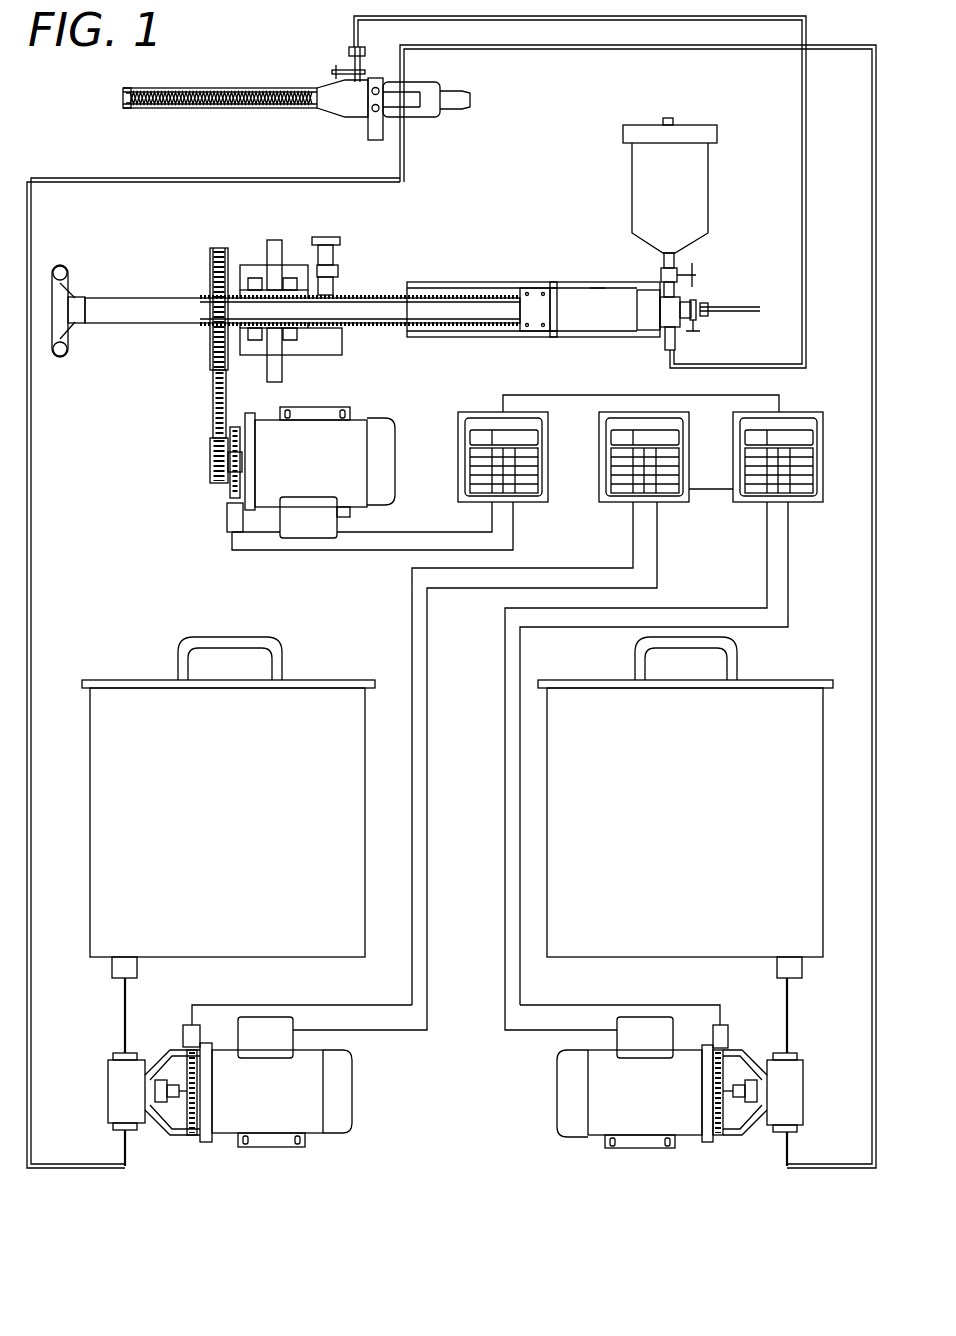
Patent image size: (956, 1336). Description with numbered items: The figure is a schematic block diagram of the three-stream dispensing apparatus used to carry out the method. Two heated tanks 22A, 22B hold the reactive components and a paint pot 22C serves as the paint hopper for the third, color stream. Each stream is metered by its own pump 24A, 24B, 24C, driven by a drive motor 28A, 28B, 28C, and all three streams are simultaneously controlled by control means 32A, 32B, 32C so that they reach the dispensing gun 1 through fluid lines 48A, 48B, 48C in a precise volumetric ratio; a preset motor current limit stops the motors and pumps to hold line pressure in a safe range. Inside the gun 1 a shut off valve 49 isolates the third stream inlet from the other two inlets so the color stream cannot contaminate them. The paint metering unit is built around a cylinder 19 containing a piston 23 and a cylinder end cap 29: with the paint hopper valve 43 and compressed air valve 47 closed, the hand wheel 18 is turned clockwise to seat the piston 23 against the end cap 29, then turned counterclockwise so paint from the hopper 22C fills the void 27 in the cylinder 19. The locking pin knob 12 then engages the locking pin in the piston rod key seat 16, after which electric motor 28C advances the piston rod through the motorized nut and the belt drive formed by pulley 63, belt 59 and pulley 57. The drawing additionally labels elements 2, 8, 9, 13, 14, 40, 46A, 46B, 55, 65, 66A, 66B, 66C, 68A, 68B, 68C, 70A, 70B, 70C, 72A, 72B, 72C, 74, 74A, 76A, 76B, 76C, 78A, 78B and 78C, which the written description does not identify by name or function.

The dispensing gun 1 is at (312, 101).
The nozzle tip 2 is at (472, 92).
The bolt 8 is at (276, 240).
The bearing block 9 is at (248, 266).
The locking pin knob 12 is at (330, 237).
The bearing housing 13 is at (342, 350).
The piston 14 is at (470, 284).
The piston rod key seat 16 is at (380, 297).
The hand wheel 18 is at (63, 266).
The cylinder 19 is at (492, 337).
The tank 22A is at (90, 770).
The tank 22B is at (823, 770).
The paint pot 22C is at (632, 182).
The piston 23 is at (552, 283).
The pump 24A is at (108, 1092).
The pump 24B is at (803, 1092).
The pump 24C is at (533, 285).
The void 27 is at (598, 300).
The drive motor 28A is at (300, 1147).
The drive motor 28B is at (610, 1148).
The drive motor 28C is at (345, 407).
The cylinder end cap 29 is at (641, 298).
The control means 32A is at (619, 457).
The control means 32B is at (803, 457).
The control means 32C is at (474, 457).
The static mixer tube 40 is at (268, 109).
The paint hopper valve 43 is at (697, 270).
The supply line A 46A is at (124, 1026).
The supply line B 46B is at (788, 1026).
The compressed air valve 47 is at (700, 330).
The fluid line 48A is at (404, 170).
The fluid line 48B is at (484, 48).
The fluid line 48C is at (354, 18).
The shut off valve 49 is at (368, 126).
The fitting 55 is at (666, 350).
The pulley 57 is at (210, 353).
The belt 59 is at (213, 406).
The pulley 63 is at (210, 459).
The outlet line 65 is at (740, 306).
The gear coupling A 66A is at (192, 1135).
The gear coupling B 66B is at (716, 1135).
The gear coupling C 66C is at (231, 489).
The encoder A 68A is at (186, 1030).
The encoder B 68B is at (728, 1030).
The encoder C 68C is at (227, 526).
The encoder cable A 70A is at (262, 1005).
The encoder cable B 70B is at (680, 1005).
The base plate 70C is at (290, 550).
The motor cable A 72A is at (428, 803).
The motor cable B 72B is at (485, 920).
The motor cable C 72C is at (463, 523).
The communication link 74 is at (717, 489).
The communication bus 74A is at (612, 395).
The display A 76A is at (611, 436).
The display B 76B is at (813, 436).
The display C 76C is at (470, 436).
The keypad A 78A is at (611, 466).
The keypad B 78B is at (813, 466).
The keypad C 78C is at (470, 466).